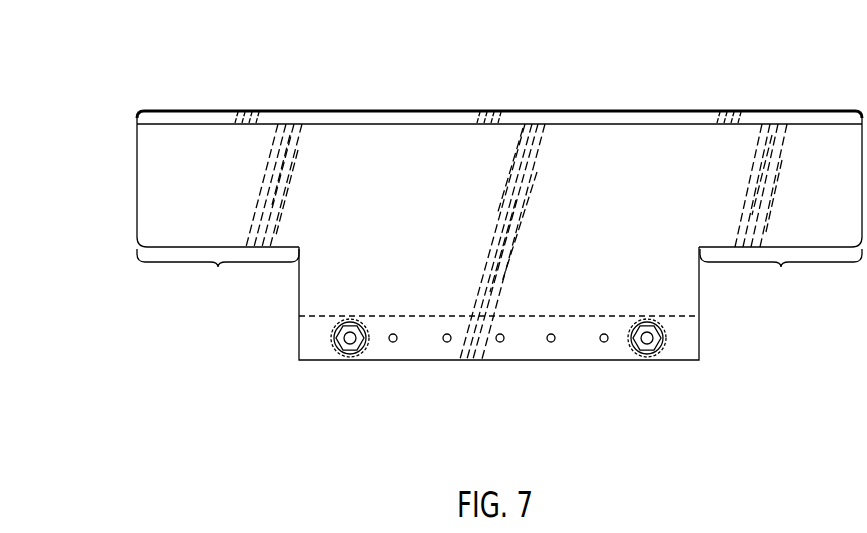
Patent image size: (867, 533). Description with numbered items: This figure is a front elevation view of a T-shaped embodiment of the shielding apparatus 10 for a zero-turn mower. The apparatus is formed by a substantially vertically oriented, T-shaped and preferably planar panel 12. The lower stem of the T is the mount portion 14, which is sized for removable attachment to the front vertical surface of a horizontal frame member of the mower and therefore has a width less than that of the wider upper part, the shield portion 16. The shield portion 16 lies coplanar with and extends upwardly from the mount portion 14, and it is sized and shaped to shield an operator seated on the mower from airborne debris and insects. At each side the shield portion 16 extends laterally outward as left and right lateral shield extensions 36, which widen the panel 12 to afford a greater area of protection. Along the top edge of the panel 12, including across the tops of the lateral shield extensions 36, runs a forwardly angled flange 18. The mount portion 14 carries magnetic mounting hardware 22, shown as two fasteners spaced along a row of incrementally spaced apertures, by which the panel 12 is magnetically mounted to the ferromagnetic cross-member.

The shielding apparatus 10 is at (471, 220).
The panel 12 is at (520, 330).
The mount portion 14 is at (299, 317).
The shield portion 16 is at (471, 219).
The forwardly angled flange 18 is at (541, 116).
The magnetic mounting hardware 22 is at (330, 347).
The lateral shield extensions 36 is at (499, 273).